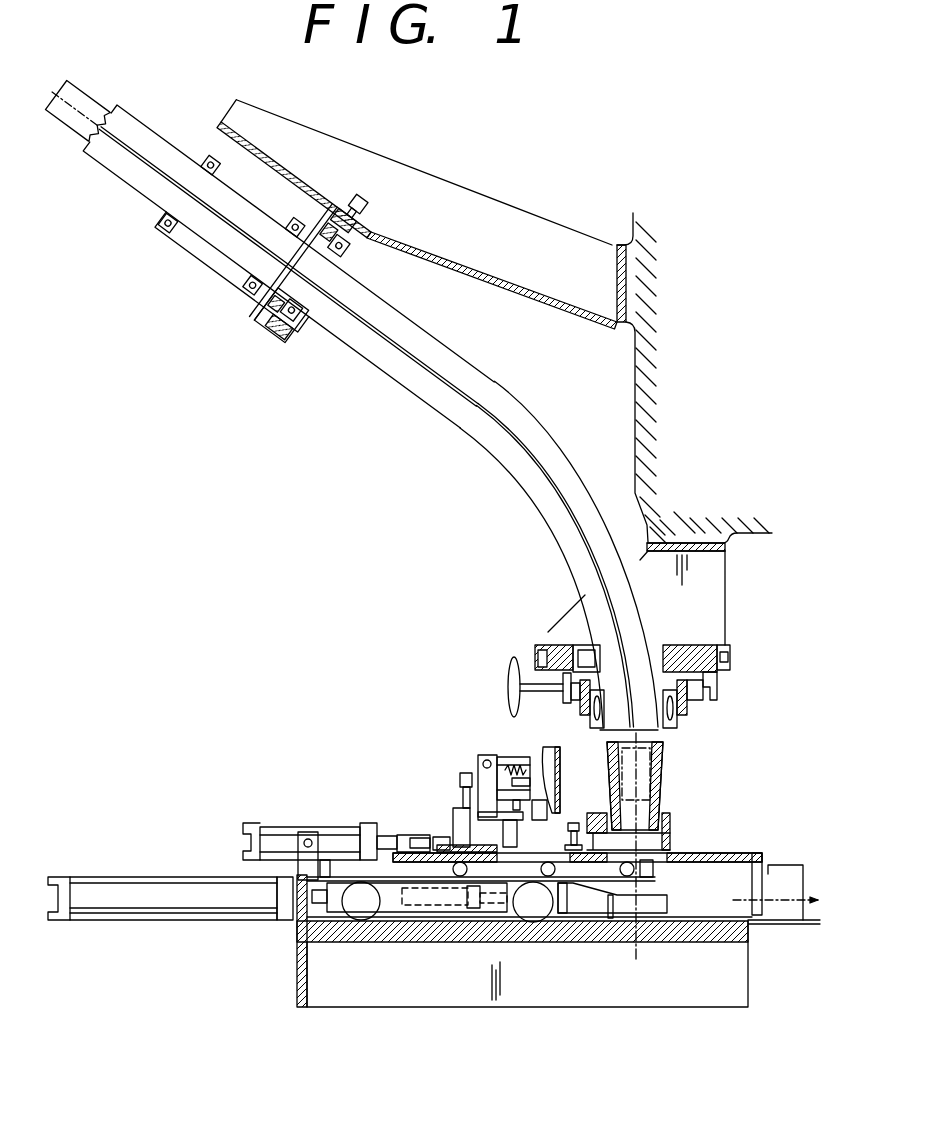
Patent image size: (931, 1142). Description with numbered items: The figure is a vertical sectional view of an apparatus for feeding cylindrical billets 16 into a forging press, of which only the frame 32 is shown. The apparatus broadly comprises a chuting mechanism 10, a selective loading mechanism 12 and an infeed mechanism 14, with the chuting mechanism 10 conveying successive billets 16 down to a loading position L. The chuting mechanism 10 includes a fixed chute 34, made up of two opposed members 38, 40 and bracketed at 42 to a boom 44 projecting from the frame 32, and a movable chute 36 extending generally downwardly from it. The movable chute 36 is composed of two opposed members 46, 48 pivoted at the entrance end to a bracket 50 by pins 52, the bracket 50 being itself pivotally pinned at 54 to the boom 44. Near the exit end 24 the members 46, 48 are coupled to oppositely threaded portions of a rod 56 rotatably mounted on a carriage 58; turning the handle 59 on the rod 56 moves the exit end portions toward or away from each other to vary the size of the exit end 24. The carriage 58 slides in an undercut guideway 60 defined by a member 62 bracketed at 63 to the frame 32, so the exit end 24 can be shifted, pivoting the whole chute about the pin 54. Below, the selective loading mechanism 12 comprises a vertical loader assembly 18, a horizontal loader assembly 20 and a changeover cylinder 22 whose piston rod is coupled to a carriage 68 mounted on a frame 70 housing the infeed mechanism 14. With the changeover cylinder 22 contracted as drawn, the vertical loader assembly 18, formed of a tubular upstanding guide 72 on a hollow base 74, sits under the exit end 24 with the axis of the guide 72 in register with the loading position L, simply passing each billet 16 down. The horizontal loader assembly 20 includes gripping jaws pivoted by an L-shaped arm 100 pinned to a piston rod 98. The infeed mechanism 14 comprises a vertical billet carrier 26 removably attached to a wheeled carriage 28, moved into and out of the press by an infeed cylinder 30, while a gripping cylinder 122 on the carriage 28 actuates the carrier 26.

The chuting mechanism 10 is at (338, 392).
The selective loading mechanism 12 is at (423, 800).
The infeed mechanism 14 is at (523, 941).
The billet 16 is at (58, 94).
The vertical loader assembly 18 is at (665, 772).
The horizontal loader assembly 20 is at (486, 750).
The changeover cylinder 22 is at (345, 837).
The exit end 24 is at (613, 731).
The vertical billet carrier 26 is at (668, 902).
The wheeled carriage 28 is at (390, 906).
The infeed cylinder 30 is at (192, 893).
The frame 32 is at (656, 417).
The fixed chute 34 is at (137, 203).
The movable chute 36 is at (471, 440).
The opposed member 38 is at (116, 180).
The opposed member 40 is at (136, 128).
The bracket 42 is at (287, 172).
The boom 44 is at (529, 295).
The movable chute member 46 is at (418, 393).
The movable chute member 48 is at (467, 366).
The bracket 50 is at (268, 322).
The pins 52 is at (341, 252).
The pivot pin 54 is at (366, 203).
The threaded rod 56 is at (545, 696).
The carriage 58 is at (546, 650).
The handle 59 is at (511, 661).
The guideway 60 is at (724, 658).
The member 62 is at (718, 673).
The bracket 63 is at (722, 623).
The carriage 68 is at (450, 838).
The frame 70 is at (336, 936).
The tubular upstanding guide 72 is at (663, 755).
The hollow base 74 is at (598, 813).
The piston rod 98 is at (465, 778).
The L-shaped arm 100 is at (463, 808).
The gripping cylinder 122 is at (448, 906).
The loading position L is at (634, 946).